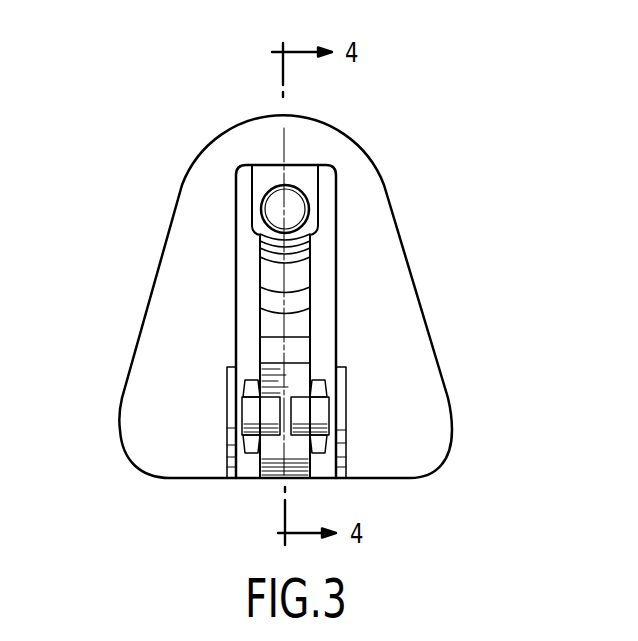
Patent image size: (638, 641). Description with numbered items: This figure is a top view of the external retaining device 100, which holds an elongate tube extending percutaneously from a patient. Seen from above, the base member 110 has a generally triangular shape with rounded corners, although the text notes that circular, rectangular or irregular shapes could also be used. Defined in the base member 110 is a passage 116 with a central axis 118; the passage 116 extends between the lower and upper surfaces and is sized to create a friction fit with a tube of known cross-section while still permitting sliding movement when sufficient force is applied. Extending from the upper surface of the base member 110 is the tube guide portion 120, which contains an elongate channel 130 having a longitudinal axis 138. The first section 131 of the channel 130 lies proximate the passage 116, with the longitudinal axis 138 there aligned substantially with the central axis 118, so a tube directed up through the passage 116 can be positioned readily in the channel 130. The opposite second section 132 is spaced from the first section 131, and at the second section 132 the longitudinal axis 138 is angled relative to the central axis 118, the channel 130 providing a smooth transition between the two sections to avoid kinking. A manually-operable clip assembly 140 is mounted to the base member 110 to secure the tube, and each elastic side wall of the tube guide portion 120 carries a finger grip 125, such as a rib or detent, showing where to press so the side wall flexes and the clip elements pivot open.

The external retaining device 100 is at (468, 122).
The base member 110 is at (182, 268).
The passage 116 is at (267, 197).
The central axis 118 is at (284, 209).
The tube guide portion 120 is at (222, 308).
The finger grip 125 is at (220, 402).
The elongate channel 130 is at (305, 255).
The first section 131 is at (303, 182).
The second section 132 is at (291, 460).
The longitudinal axis 138 is at (285, 303).
The clip assembly 140 is at (347, 375).